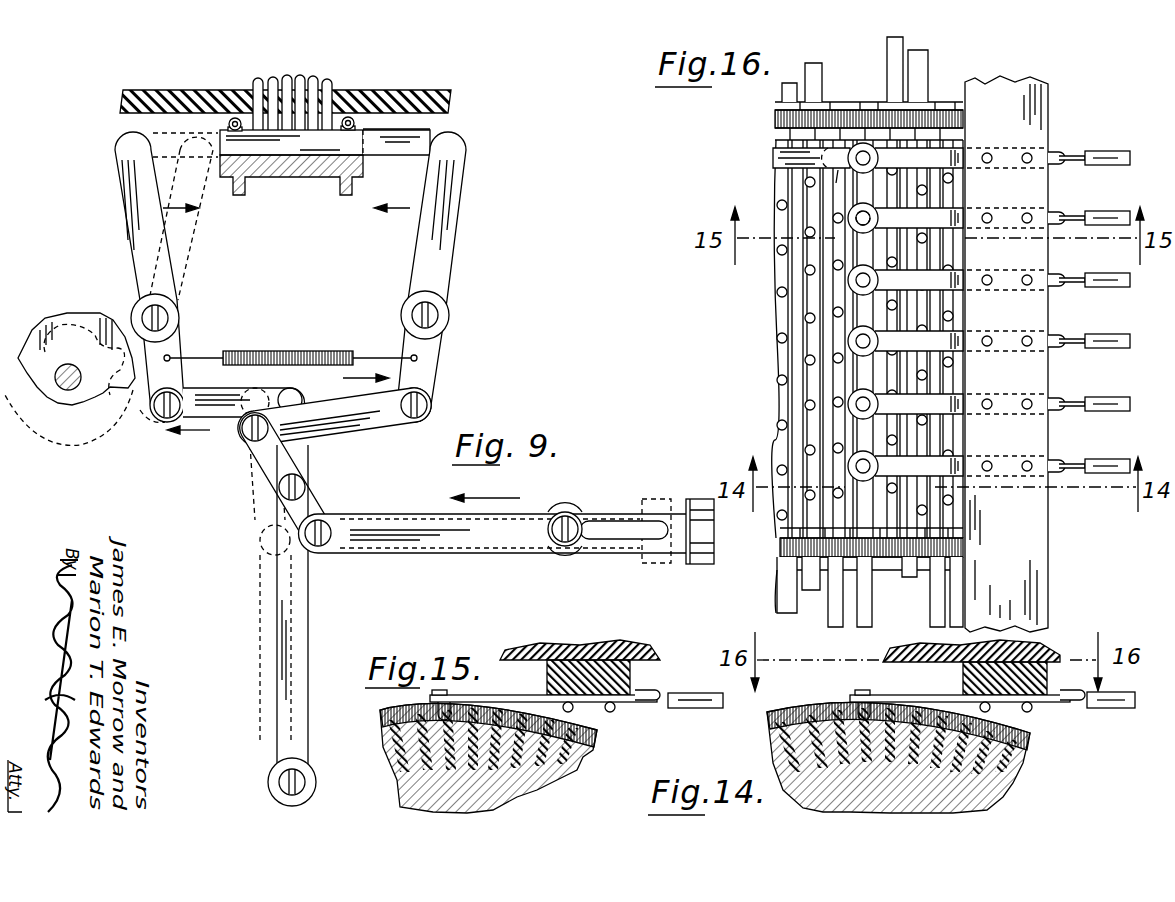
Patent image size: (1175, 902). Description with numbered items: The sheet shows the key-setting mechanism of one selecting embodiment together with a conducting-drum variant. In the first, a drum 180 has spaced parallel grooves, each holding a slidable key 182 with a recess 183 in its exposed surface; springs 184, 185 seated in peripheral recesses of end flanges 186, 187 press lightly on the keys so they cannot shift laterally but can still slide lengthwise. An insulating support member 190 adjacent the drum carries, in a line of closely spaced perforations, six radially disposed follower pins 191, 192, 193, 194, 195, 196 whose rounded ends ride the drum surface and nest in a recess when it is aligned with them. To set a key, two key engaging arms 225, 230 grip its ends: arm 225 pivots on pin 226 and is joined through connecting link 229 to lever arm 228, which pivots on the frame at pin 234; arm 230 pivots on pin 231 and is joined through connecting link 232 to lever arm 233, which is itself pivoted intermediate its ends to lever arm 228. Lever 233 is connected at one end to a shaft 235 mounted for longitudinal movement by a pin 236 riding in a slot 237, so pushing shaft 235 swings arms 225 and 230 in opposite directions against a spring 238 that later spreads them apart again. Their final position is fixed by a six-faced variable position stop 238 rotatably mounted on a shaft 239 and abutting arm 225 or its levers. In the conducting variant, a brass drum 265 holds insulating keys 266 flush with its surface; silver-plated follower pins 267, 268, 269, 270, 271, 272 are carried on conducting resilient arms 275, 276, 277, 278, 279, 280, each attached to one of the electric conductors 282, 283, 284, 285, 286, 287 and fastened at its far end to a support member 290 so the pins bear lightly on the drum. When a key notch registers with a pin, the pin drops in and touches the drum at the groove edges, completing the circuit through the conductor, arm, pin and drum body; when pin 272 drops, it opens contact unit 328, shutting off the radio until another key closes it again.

In FIG. 9, the drum 180 is at (350, 179).
In FIG. 9, the key 182 is at (413, 146).
In FIG. 9, the recess 183 is at (294, 142).
In FIG. 9, the spring 184 is at (228, 124).
In FIG. 9, the spring 185 is at (356, 122).
In FIG. 9, the flange 186 is at (218, 131).
In FIG. 9, the flange 187 is at (364, 131).
In FIG. 9, the support member 190 is at (453, 101).
In FIG. 9, the follower pin 191 is at (253, 84).
In FIG. 9, the follower pin 192 is at (270, 80).
In FIG. 9, the follower pin 193 is at (286, 78).
In FIG. 9, the follower pin 194 is at (300, 79).
In FIG. 9, the follower pin 195 is at (314, 80).
In FIG. 9, the follower pin 196 is at (330, 86).
In FIG. 9, the key engaging arm 225 is at (135, 200).
In FIG. 9, the pin 226 is at (168, 318).
In FIG. 9, the lever arm 228 is at (306, 594).
In FIG. 9, the connecting link 229 is at (222, 393).
In FIG. 9, the key engaging arm 230 is at (443, 165).
In FIG. 9, the pin 231 is at (440, 316).
In FIG. 9, the connecting link 232 is at (357, 420).
In FIG. 9, the lever arm 233 is at (267, 458).
In FIG. 9, the pin 234 is at (278, 781).
In FIG. 9, the shaft 235 is at (463, 540).
In FIG. 9, the pin 236 is at (574, 517).
In FIG. 9, the slot 237 is at (612, 533).
In FIG. 9, the spring and variable position stop 238 is at (70, 325).
In FIG. 9, the shaft 239 is at (62, 389).
In FIG. 16, the drum 265 is at (772, 364).
In FIG. 15, the drum 265 is at (497, 800).
In FIG. 14, the drum 265 is at (993, 803).
In FIG. 16, the key 266 is at (862, 628).
In FIG. 15, the key 266 is at (573, 767).
In FIG. 14, the key 266 is at (1027, 767).
In FIG. 16, the follower pin 267 is at (870, 466).
In FIG. 14, the follower pin 267 is at (856, 697).
In FIG. 16, the follower pin 268 is at (870, 404).
In FIG. 16, the follower pin 269 is at (870, 341).
In FIG. 16, the follower pin 270 is at (870, 280).
In FIG. 16, the follower pin 271 is at (870, 218).
In FIG. 15, the follower pin 271 is at (430, 697).
In FIG. 16, the follower pin 272 is at (870, 158).
In FIG. 16, the resilient arm 275 is at (947, 467).
In FIG. 14, the resilient arm 275 is at (892, 693).
In FIG. 16, the resilient arm 276 is at (947, 405).
In FIG. 16, the resilient arm 277 is at (946, 342).
In FIG. 16, the resilient arm 278 is at (946, 281).
In FIG. 16, the resilient arm 279 is at (946, 219).
In FIG. 15, the resilient arm 279 is at (470, 696).
In FIG. 16, the resilient arm 280 is at (953, 160).
In FIG. 16, the electric conductor 282 is at (1098, 459).
In FIG. 14, the electric conductor 282 is at (1117, 704).
In FIG. 16, the electric conductor 283 is at (1098, 397).
In FIG. 16, the electric conductor 284 is at (1098, 334).
In FIG. 16, the electric conductor 285 is at (1097, 273).
In FIG. 16, the electric conductor 286 is at (1100, 211).
In FIG. 15, the electric conductor 286 is at (695, 704).
In FIG. 16, the electric conductor 287 is at (1100, 151).
In FIG. 16, the support member 290 is at (1032, 541).
In FIG. 15, the support member 290 is at (630, 677).
In FIG. 14, the support member 290 is at (965, 678).
In FIG. 16, the contact unit 328 is at (832, 175).